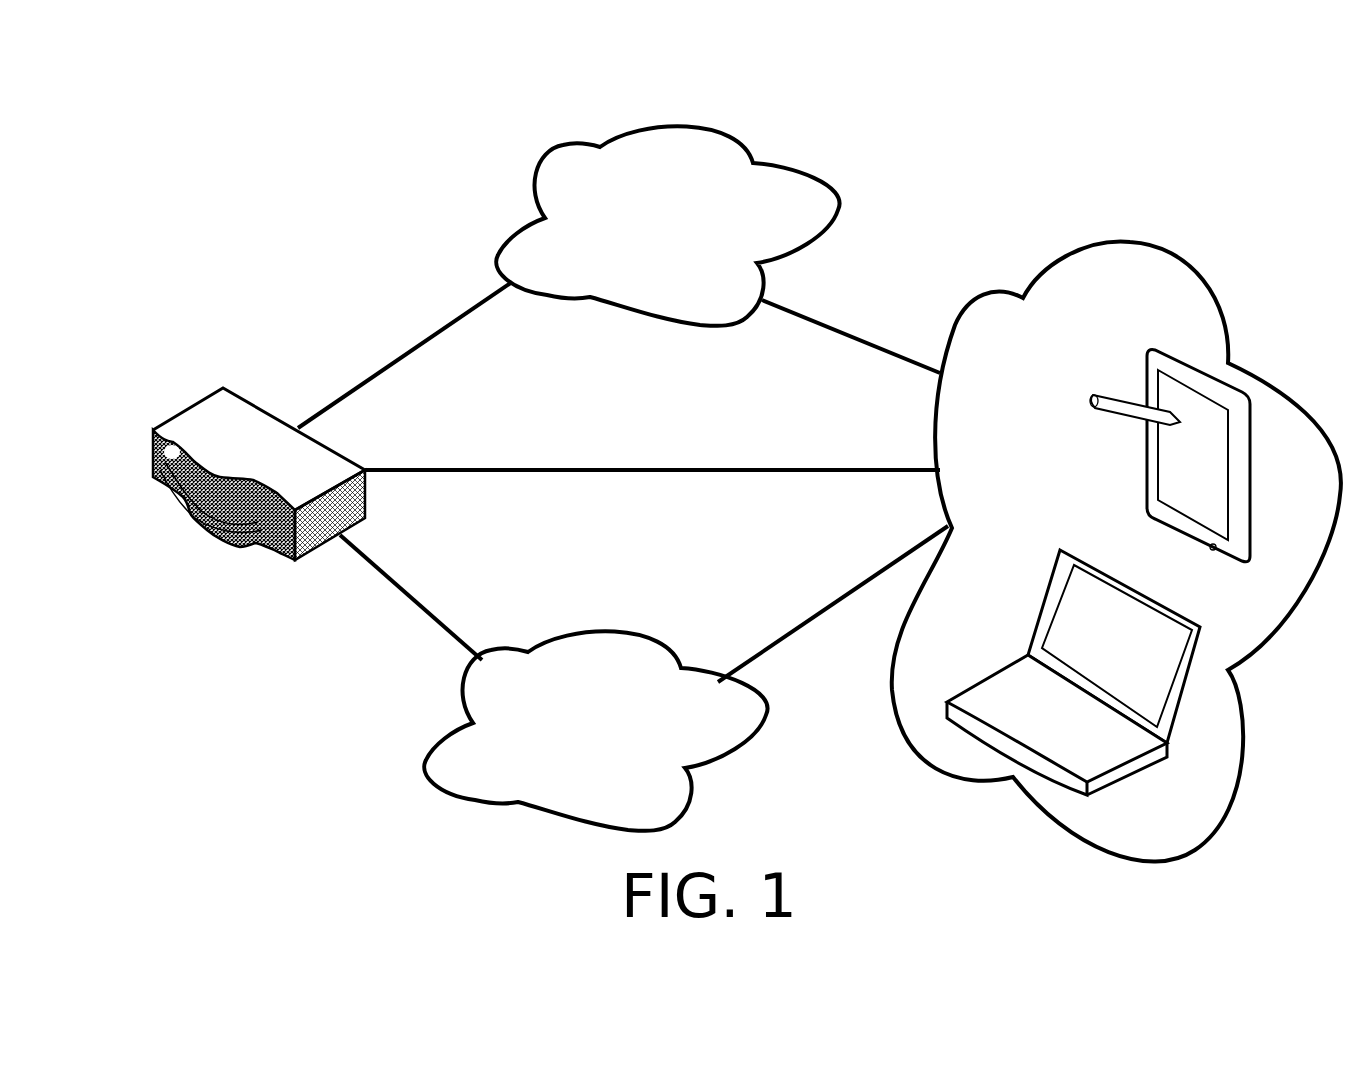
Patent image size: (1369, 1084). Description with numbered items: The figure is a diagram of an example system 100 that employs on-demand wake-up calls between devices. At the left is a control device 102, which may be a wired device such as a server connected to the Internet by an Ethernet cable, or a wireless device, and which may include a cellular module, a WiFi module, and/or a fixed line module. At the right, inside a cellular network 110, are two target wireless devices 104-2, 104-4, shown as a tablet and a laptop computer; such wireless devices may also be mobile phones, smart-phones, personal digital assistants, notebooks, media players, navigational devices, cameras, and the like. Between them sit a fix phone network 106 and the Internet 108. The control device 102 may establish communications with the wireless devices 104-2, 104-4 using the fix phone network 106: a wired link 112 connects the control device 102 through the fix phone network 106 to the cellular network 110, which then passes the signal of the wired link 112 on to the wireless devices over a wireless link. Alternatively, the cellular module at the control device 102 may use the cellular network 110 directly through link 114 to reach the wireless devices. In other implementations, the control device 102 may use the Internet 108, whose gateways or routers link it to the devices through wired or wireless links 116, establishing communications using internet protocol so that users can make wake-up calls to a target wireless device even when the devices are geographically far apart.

The system 100 is at (165, 122).
The control device 102 is at (172, 428).
The wireless device 104-2 is at (1145, 480).
The wireless device 104-4 is at (1020, 657).
The fix phone network 106 is at (667, 226).
The Internet 108 is at (595, 731).
The cellular network 110 is at (1116, 552).
The wired link 112 is at (422, 335).
The link 114 is at (632, 468).
The wired or wireless links 116 is at (410, 590).